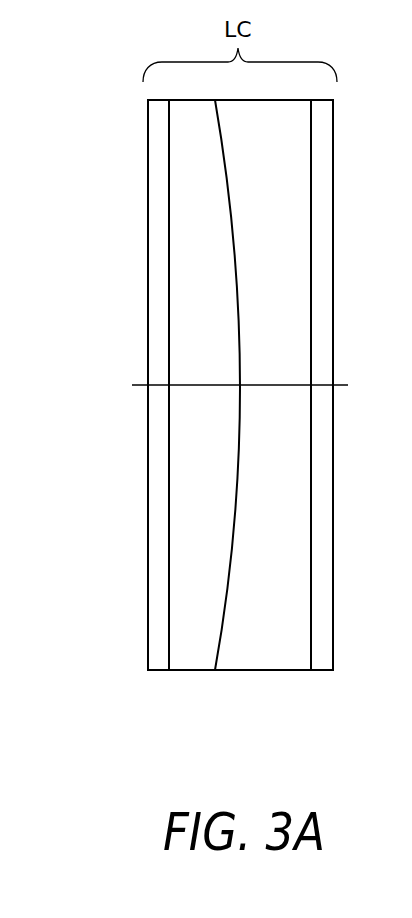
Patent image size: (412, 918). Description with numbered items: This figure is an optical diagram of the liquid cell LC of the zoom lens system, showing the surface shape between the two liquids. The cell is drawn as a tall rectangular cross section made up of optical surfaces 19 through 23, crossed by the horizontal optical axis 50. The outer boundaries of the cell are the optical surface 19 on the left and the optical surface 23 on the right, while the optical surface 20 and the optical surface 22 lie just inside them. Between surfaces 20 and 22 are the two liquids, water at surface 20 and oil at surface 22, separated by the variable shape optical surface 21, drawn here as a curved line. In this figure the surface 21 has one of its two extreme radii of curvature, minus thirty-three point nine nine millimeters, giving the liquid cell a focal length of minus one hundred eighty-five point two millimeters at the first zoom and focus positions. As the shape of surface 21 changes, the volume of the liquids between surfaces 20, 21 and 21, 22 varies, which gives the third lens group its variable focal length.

The optical surface 19 is at (148, 628).
The optical surface 20 is at (170, 645).
The variable shape optical surface 21 is at (230, 595).
The optical surface 22 is at (311, 625).
The optical surface 23 is at (333, 607).
The optical axis 50 is at (142, 387).